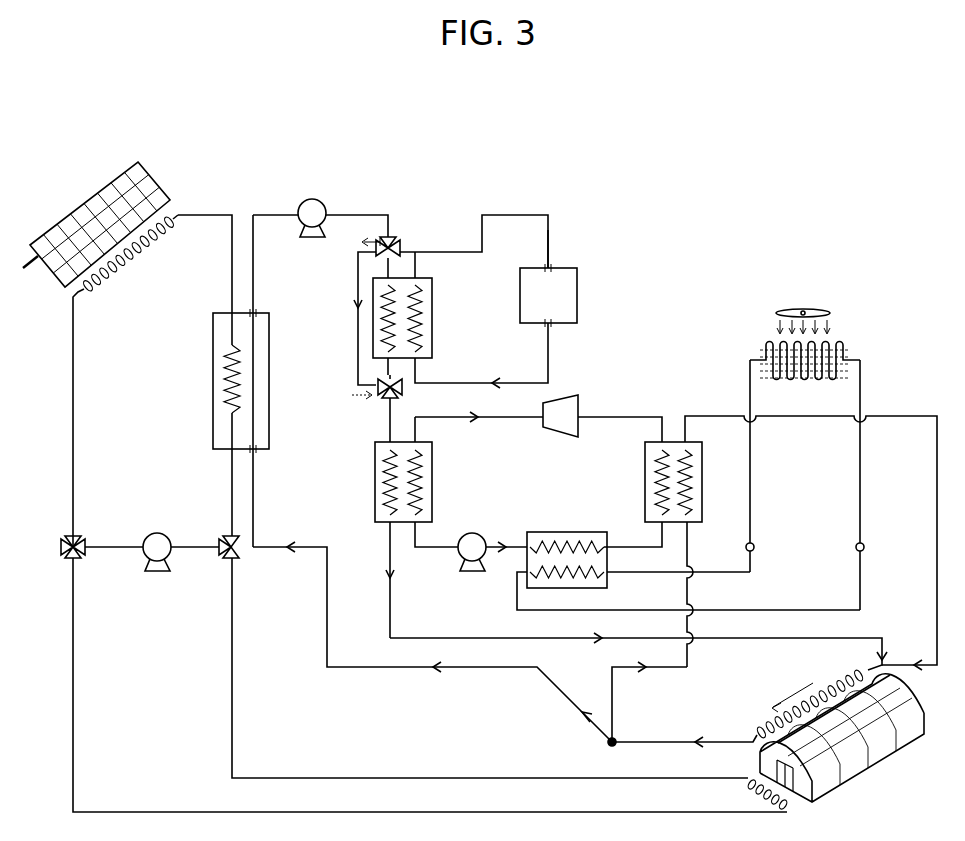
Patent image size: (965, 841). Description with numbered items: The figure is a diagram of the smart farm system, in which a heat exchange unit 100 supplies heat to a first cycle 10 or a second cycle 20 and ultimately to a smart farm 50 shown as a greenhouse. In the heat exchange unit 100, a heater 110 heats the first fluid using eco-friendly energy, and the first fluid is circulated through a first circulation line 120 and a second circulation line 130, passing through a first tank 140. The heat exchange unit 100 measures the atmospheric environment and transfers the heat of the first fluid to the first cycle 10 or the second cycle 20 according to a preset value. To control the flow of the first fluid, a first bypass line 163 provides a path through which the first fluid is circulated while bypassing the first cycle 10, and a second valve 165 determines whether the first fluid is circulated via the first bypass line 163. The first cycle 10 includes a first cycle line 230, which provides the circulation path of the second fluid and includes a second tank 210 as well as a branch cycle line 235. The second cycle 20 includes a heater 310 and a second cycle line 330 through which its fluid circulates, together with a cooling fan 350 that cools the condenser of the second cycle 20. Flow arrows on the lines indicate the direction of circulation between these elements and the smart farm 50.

The first cycle 10 is at (530, 208).
The second cycle 20 is at (598, 404).
The greenhouse 50 is at (866, 772).
The heat exchange unit 100 is at (289, 206).
The heater 110 is at (84, 195).
The first circulation line 120 is at (203, 213).
The second circulation line 130 is at (348, 213).
The first tank 140 is at (213, 345).
The first bypass line 163 is at (356, 270).
The second valve 165 is at (398, 240).
The second tank 210 is at (580, 292).
The first cycle line 230 is at (550, 236).
The 1-3 cycle line 235 is at (687, 668).
The heater 310 is at (372, 475).
The second cycle line 330 is at (504, 420).
The cooling fan 350 is at (846, 348).